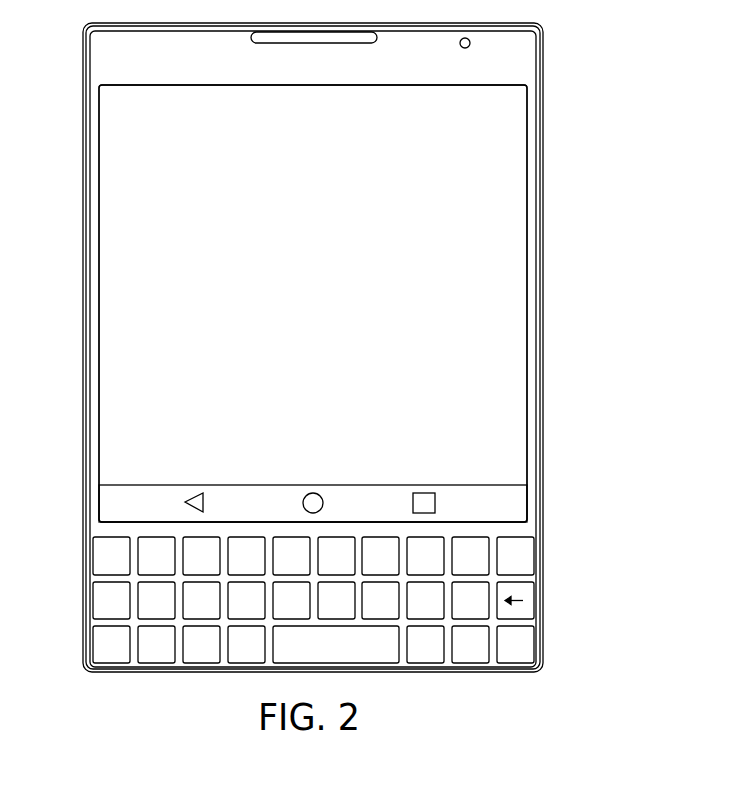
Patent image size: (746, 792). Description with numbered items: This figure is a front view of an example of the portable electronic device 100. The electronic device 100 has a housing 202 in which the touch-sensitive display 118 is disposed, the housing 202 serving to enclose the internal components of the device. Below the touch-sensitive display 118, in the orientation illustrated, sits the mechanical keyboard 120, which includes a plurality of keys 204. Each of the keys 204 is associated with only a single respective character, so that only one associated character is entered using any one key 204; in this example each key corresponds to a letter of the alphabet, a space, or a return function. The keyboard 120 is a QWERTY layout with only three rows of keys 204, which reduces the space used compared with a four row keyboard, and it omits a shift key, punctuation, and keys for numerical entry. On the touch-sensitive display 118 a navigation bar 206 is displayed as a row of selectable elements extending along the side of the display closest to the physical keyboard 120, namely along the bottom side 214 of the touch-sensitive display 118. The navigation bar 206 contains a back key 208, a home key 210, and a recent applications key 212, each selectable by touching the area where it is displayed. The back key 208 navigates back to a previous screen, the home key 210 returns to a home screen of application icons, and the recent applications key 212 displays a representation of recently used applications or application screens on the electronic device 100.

The electronic device 100 is at (327, 370).
The touch-sensitive display 118 is at (525, 121).
The housing 202 is at (542, 168).
The navigation bar 206 is at (521, 514).
The back key 208 is at (190, 494).
The home key 210 is at (309, 496).
The recent applications key 212 is at (420, 493).
The bottom side 214 is at (122, 521).
The mechanical keyboard 120 is at (537, 550).
The keys 204 is at (526, 592).